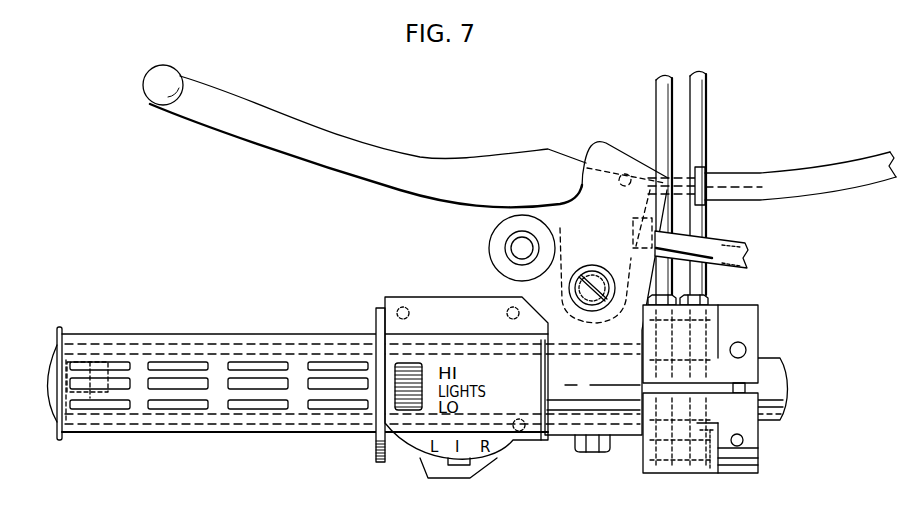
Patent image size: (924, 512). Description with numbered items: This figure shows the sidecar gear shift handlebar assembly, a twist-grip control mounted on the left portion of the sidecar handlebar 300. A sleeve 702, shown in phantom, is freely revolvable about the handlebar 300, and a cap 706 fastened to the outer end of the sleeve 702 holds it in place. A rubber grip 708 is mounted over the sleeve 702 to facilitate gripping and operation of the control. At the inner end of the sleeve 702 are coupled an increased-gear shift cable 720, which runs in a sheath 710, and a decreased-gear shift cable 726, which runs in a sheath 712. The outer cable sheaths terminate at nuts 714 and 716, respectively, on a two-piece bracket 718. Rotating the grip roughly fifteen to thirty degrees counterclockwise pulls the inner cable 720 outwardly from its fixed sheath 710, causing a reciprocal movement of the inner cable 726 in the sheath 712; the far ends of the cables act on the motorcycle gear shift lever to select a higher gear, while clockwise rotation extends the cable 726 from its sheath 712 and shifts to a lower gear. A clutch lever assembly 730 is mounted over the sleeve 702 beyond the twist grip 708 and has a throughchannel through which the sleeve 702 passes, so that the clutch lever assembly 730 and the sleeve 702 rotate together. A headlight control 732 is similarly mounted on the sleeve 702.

The handlebar 300 is at (212, 352).
The sleeve 702 is at (118, 347).
The cap 706 is at (50, 358).
The rubber grip 708 is at (168, 434).
The sheath 710 is at (656, 93).
The sheath 712 is at (708, 115).
The nut 714 is at (660, 292).
The nut 716 is at (697, 296).
The two-piece bracket 718 is at (758, 468).
The increased-gear shift cable 720 is at (641, 445).
The decreased-gear shift cable 726 is at (712, 470).
The clutch lever assembly 730 is at (436, 163).
The headlight control 732 is at (400, 297).